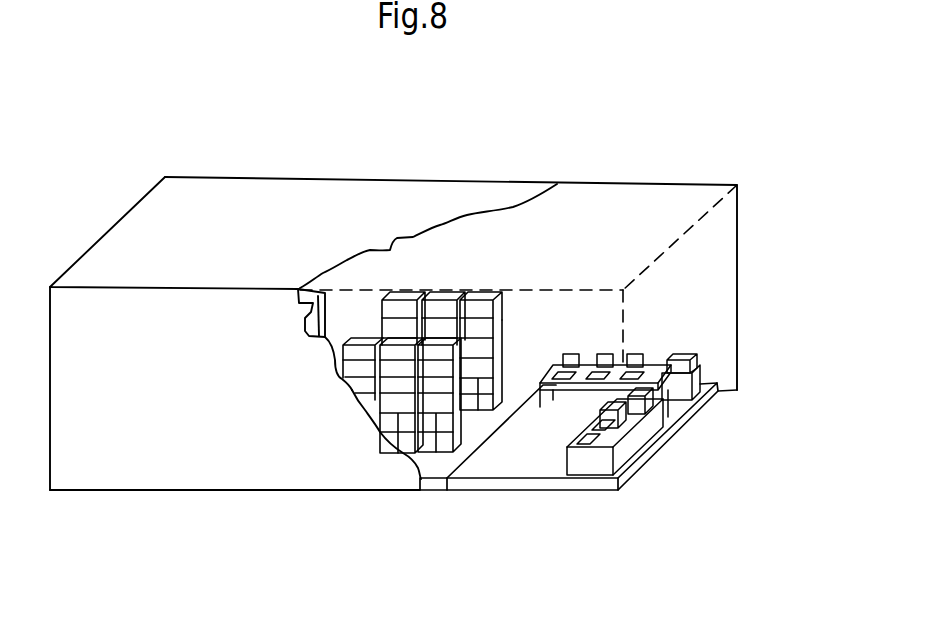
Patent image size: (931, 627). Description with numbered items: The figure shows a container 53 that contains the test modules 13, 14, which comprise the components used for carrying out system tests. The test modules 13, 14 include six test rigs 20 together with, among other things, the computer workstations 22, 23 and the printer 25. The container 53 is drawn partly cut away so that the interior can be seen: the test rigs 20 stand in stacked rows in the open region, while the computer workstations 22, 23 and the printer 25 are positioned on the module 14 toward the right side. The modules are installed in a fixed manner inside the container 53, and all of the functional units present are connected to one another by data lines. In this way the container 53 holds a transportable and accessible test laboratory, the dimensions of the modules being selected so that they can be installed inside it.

The container 53 is at (437, 178).
The test module 13 is at (423, 490).
The test module 14 is at (552, 482).
The test rig 20 is at (363, 338).
The computer workstation 22 is at (652, 365).
The printer 25 is at (680, 358).
The computer workstation 23 is at (600, 440).